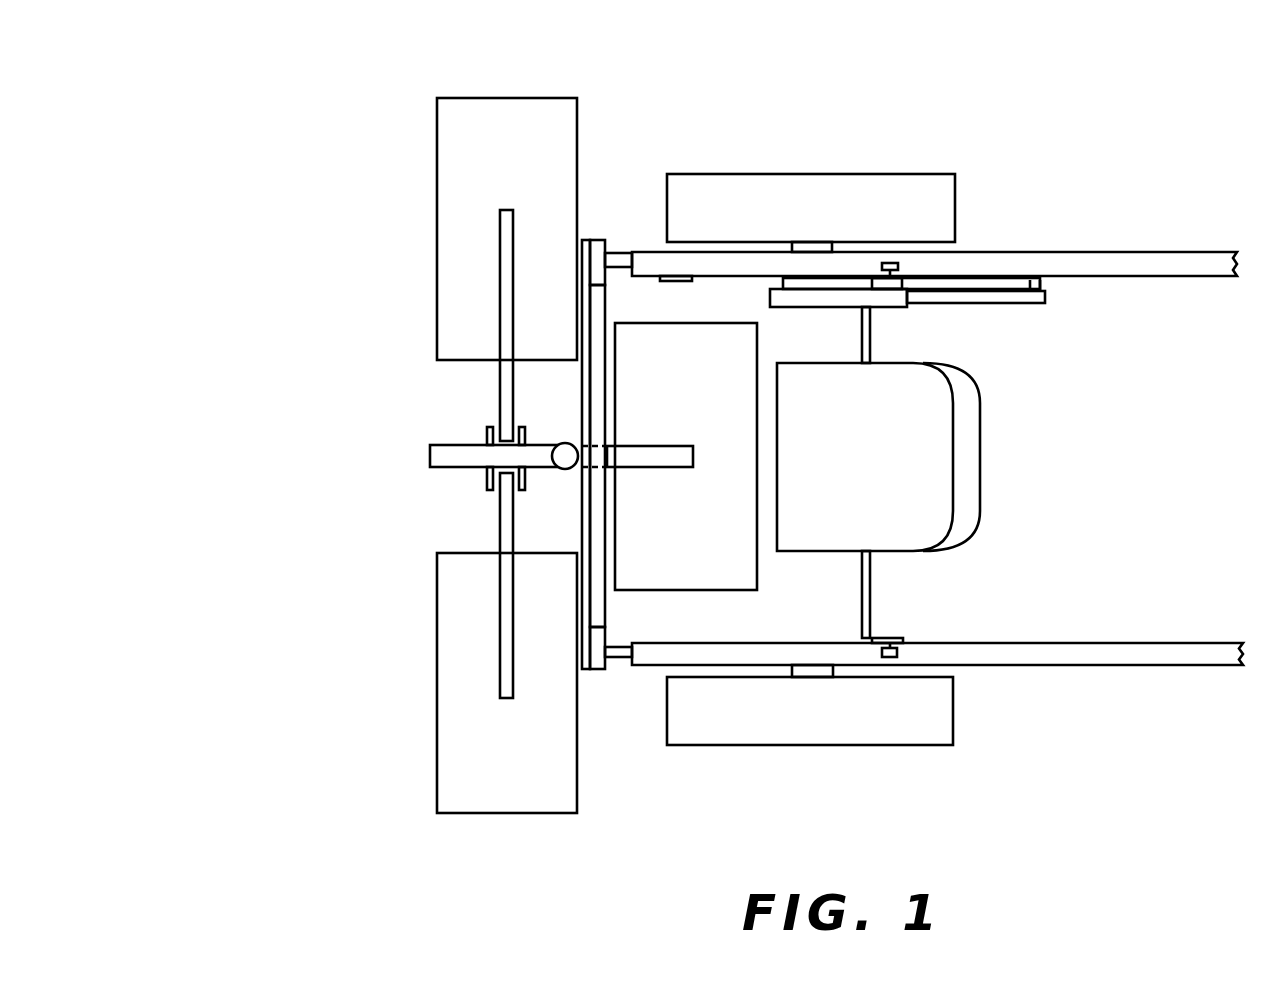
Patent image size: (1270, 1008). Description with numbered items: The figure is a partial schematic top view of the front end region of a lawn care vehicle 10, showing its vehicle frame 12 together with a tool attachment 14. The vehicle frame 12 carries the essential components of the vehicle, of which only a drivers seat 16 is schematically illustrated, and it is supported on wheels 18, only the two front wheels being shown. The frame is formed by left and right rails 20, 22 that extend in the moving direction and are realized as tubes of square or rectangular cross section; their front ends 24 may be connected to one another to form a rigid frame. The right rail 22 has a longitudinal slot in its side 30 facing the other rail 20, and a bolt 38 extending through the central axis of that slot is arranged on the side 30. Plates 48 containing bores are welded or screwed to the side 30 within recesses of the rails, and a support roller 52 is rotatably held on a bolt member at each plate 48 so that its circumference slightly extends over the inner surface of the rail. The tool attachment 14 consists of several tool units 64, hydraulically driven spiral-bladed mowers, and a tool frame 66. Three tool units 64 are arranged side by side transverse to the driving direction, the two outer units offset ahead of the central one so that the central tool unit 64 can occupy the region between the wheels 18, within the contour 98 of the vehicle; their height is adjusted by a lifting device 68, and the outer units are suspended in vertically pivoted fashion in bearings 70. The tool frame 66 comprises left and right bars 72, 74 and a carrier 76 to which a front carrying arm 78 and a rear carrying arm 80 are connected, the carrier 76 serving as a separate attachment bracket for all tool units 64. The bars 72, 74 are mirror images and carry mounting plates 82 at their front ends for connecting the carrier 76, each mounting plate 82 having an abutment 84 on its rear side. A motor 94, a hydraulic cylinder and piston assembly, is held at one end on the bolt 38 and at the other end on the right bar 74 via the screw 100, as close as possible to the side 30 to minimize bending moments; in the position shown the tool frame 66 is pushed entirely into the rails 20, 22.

The lawn care vehicle 10 is at (1113, 102).
The vehicle frame 12 is at (1137, 249).
The tool attachment 14 is at (313, 232).
The drivers seat 16 is at (880, 465).
The wheels 18 is at (832, 173).
The left rail 20 is at (1117, 667).
The right rail 22 is at (993, 252).
The front ends 24 is at (633, 247).
The side 30 is at (1143, 282).
The bolt 38 is at (778, 277).
The plate 48 is at (665, 282).
The support roller 52 is at (892, 262).
The tool units 64 is at (522, 158).
The tool frame 66 is at (458, 471).
The lifting device 68 is at (560, 470).
The bearings 70 is at (486, 437).
The left bar 72 is at (618, 662).
The right bar 74 is at (614, 250).
The carrier 76 is at (589, 670).
The front carrying arm 78 is at (430, 457).
The rear carrying arm 80 is at (650, 469).
The mounting plates 82 is at (603, 607).
The abutment 84 is at (598, 660).
The motor 94 is at (843, 308).
The contour 98 is at (645, 675).
The screw 100 is at (1043, 290).